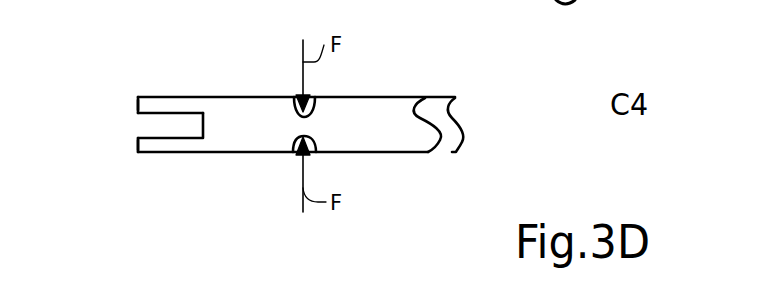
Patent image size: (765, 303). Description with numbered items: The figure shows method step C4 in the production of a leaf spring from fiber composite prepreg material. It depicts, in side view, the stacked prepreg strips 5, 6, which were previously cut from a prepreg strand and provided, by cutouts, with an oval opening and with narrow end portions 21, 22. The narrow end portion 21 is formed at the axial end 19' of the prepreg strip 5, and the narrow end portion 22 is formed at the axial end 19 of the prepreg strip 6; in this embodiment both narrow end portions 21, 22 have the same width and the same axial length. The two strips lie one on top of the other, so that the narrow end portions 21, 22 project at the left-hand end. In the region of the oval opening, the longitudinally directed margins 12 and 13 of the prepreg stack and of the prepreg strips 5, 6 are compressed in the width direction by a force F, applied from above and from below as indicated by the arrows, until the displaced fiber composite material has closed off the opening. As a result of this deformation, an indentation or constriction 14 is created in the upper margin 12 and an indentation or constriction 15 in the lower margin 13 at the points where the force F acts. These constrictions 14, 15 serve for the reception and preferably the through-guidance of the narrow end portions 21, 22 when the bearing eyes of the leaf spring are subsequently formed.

The prepreg strip 5 is at (398, 108).
The prepreg strip 6 is at (448, 118).
The longitudinally directed margin 12 is at (233, 94).
The longitudinally directed margin 13 is at (228, 153).
The indentation or constriction 14 is at (314, 110).
The indentation or constriction 15 is at (315, 142).
The axial end 19 is at (96, 145).
The axial end 19' is at (96, 105).
The narrow end portion 21 is at (161, 102).
The narrow end portion 22 is at (158, 145).